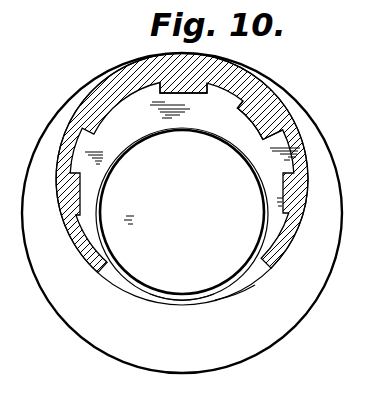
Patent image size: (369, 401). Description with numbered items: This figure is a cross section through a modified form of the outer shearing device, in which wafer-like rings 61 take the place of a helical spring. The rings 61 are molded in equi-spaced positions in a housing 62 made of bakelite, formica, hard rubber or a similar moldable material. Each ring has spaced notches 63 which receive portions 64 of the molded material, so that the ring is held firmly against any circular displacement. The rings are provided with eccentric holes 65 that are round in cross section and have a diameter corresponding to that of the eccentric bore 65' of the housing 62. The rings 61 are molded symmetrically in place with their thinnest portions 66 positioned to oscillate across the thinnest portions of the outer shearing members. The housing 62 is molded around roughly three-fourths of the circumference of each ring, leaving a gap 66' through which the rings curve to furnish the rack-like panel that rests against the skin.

The wafer-like rings 61 is at (114, 271).
The housing 62 is at (292, 128).
The notches 63 is at (190, 94).
The portions of the molded material 64 is at (246, 112).
The eccentric holes 65 is at (182, 214).
The eccentric bore 65' is at (182, 212).
The thinnest portions 66 is at (183, 320).
The gap 66' is at (252, 311).